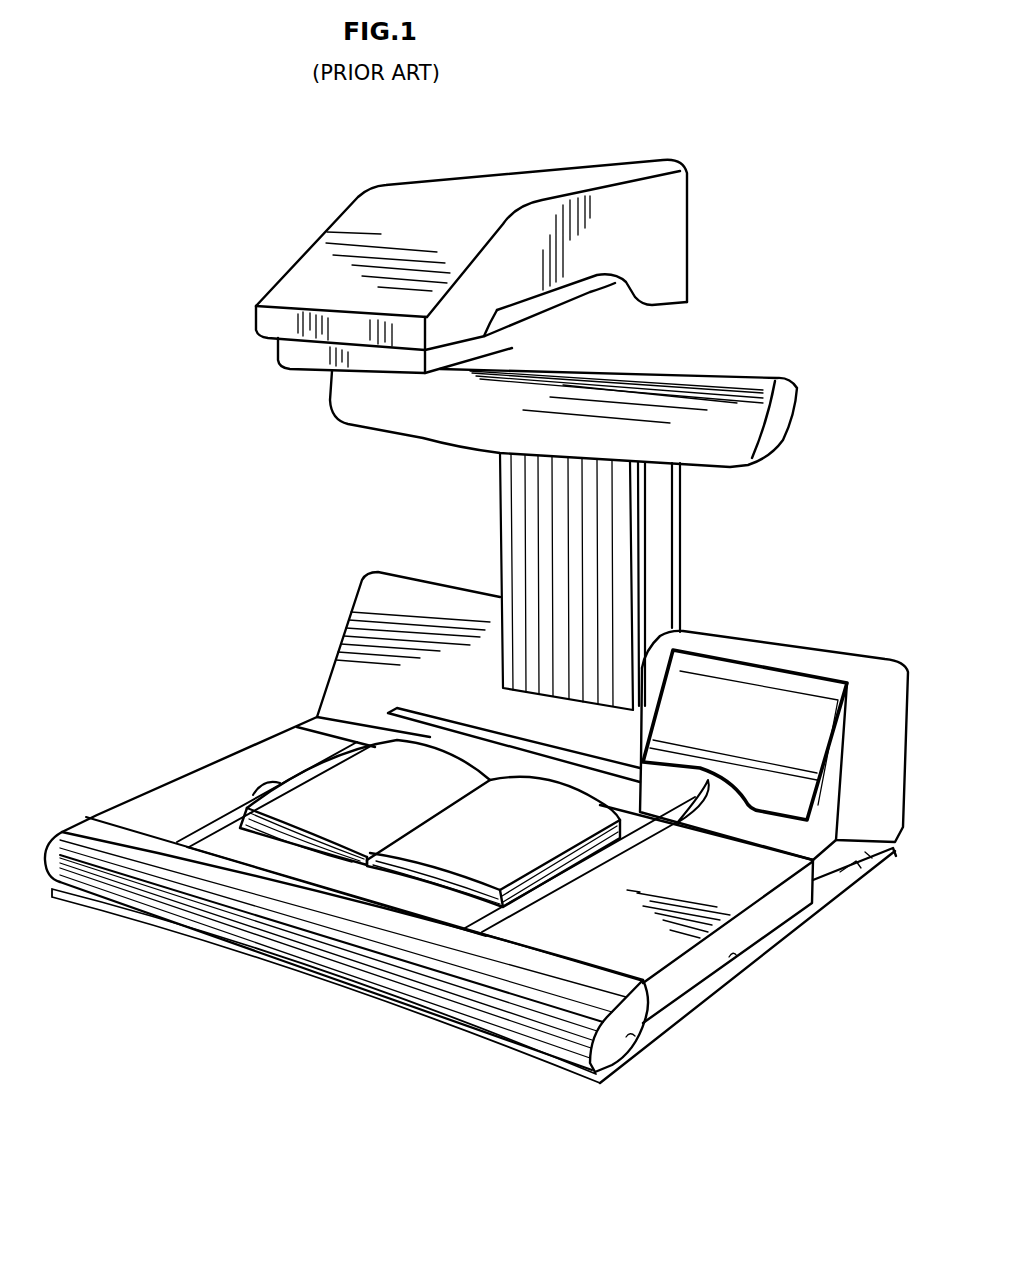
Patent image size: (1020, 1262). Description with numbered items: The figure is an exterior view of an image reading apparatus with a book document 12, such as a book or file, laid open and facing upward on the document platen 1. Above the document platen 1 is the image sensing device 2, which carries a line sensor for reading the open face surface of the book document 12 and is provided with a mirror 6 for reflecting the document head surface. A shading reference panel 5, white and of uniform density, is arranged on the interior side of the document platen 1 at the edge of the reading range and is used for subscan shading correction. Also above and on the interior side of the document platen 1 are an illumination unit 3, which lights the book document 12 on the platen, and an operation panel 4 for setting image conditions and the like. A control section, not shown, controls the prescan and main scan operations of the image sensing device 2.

The document platen 1 is at (492, 926).
The image sensing device 2 is at (458, 184).
The illumination unit 3 is at (744, 378).
The operation panel 4 is at (833, 690).
The shading reference panel 5 is at (397, 708).
The mirror 6 is at (383, 730).
The book document 12 is at (317, 787).